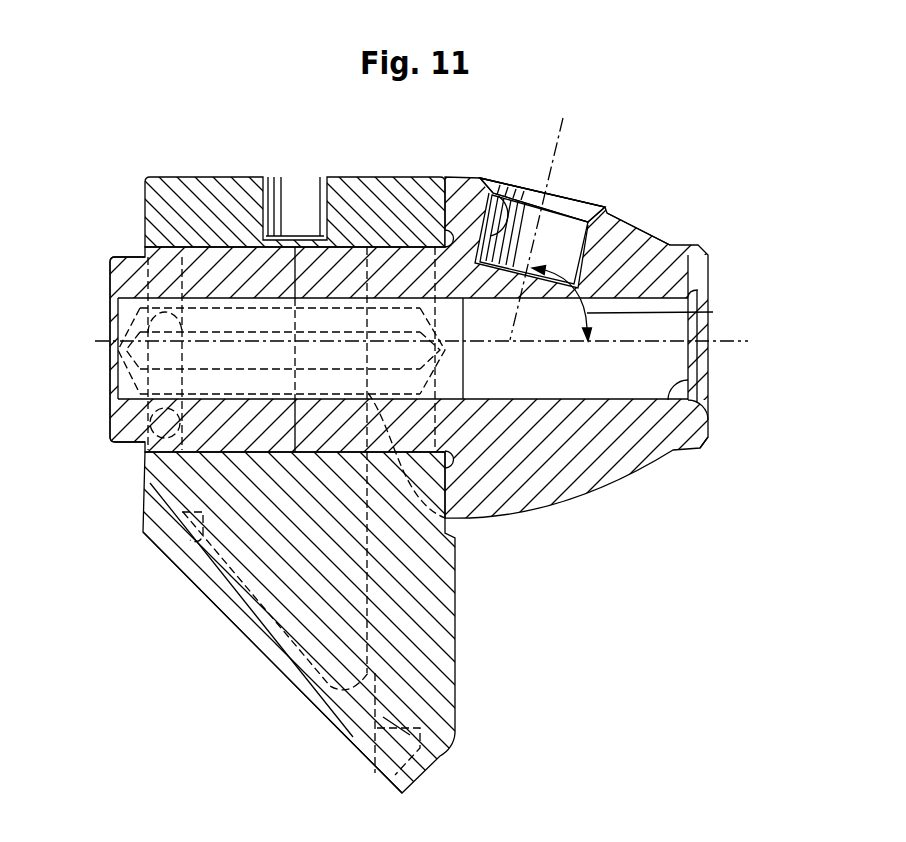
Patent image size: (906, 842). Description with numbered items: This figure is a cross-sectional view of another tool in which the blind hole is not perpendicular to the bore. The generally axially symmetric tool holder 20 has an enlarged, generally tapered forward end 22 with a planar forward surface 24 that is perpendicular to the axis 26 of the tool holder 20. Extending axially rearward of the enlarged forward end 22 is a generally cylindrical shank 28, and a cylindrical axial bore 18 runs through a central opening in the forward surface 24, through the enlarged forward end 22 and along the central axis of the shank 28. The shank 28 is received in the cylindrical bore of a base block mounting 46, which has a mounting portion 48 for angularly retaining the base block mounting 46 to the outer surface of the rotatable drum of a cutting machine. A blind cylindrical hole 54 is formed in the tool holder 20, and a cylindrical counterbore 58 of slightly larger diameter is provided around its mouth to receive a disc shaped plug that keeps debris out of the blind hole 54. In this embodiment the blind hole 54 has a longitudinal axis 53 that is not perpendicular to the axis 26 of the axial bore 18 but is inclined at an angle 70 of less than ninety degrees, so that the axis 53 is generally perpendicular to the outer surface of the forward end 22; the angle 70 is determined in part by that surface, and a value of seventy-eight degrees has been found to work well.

The axial bore 18 is at (688, 382).
The tool holder 20 is at (558, 503).
The forward end 22 is at (638, 222).
The forward surface 24 is at (709, 438).
The axis 26 is at (720, 342).
The shank 28 is at (112, 440).
The base block mounting 46 is at (457, 656).
The mounting portion 48 is at (230, 618).
The longitudinal axis of the blind hole 53 is at (558, 149).
The blind hole 54 is at (522, 215).
The counterbore 58 is at (607, 202).
The angle 70 is at (713, 312).